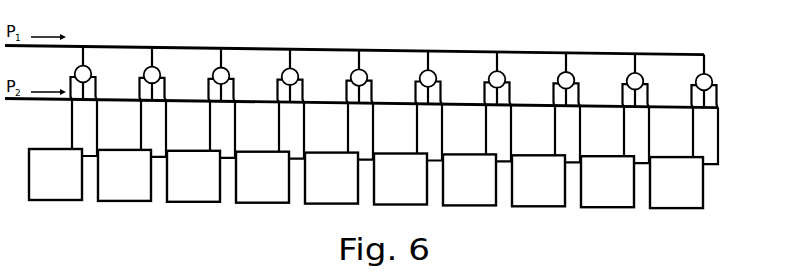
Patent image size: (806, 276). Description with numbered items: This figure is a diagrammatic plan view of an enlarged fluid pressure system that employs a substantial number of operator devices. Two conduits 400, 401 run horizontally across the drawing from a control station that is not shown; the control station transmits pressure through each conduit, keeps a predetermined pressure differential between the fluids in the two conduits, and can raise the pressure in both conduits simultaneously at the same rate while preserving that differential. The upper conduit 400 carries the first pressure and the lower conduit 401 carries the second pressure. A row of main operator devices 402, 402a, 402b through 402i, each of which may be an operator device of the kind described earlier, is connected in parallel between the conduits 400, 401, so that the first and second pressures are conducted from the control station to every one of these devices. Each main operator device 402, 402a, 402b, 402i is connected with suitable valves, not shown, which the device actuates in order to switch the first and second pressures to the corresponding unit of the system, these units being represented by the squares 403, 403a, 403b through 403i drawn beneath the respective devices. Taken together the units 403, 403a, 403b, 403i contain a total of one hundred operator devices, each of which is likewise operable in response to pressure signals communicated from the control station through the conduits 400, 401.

The conduit 400 is at (69, 46).
The conduit 401 is at (72, 102).
The main operator device 402 is at (90, 68).
The main operator device 402a is at (203, 65).
The main operator device 402b is at (273, 65).
The main operator device 402i is at (762, 70).
The unit of the system 403 is at (46, 191).
The unit of the system 403a is at (113, 194).
The unit of the system 403b is at (223, 216).
The unit of the system 403i is at (736, 221).